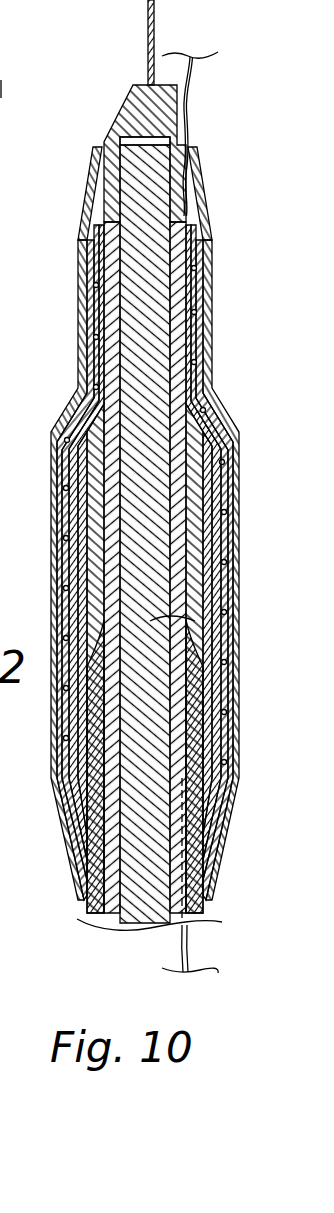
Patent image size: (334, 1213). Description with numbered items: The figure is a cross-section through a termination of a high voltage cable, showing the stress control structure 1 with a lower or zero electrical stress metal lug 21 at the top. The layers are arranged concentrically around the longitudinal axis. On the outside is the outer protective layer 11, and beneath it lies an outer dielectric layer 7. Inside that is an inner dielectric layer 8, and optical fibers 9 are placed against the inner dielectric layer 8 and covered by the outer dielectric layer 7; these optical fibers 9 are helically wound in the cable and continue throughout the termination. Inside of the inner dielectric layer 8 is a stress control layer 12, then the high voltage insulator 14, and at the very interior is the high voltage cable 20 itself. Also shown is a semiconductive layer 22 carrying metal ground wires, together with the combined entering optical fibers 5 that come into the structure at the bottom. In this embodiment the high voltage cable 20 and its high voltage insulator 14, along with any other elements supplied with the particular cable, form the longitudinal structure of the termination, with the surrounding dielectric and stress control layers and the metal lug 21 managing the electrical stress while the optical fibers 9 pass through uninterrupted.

The stress control structure 1 is at (46, 262).
The metal lug 21 is at (110, 67).
The outer protective layer 11 is at (203, 205).
The outer dielectric layer 7 is at (212, 255).
The inner dielectric layer 8 is at (190, 372).
The optical fibers 9 is at (198, 311).
The stress control layer 12 is at (200, 490).
The high voltage insulator 14 is at (180, 579).
The high voltage cable 20 is at (213, 628).
The semiconductive layer 22 is at (184, 778).
The entering optical fibers 5 is at (174, 941).